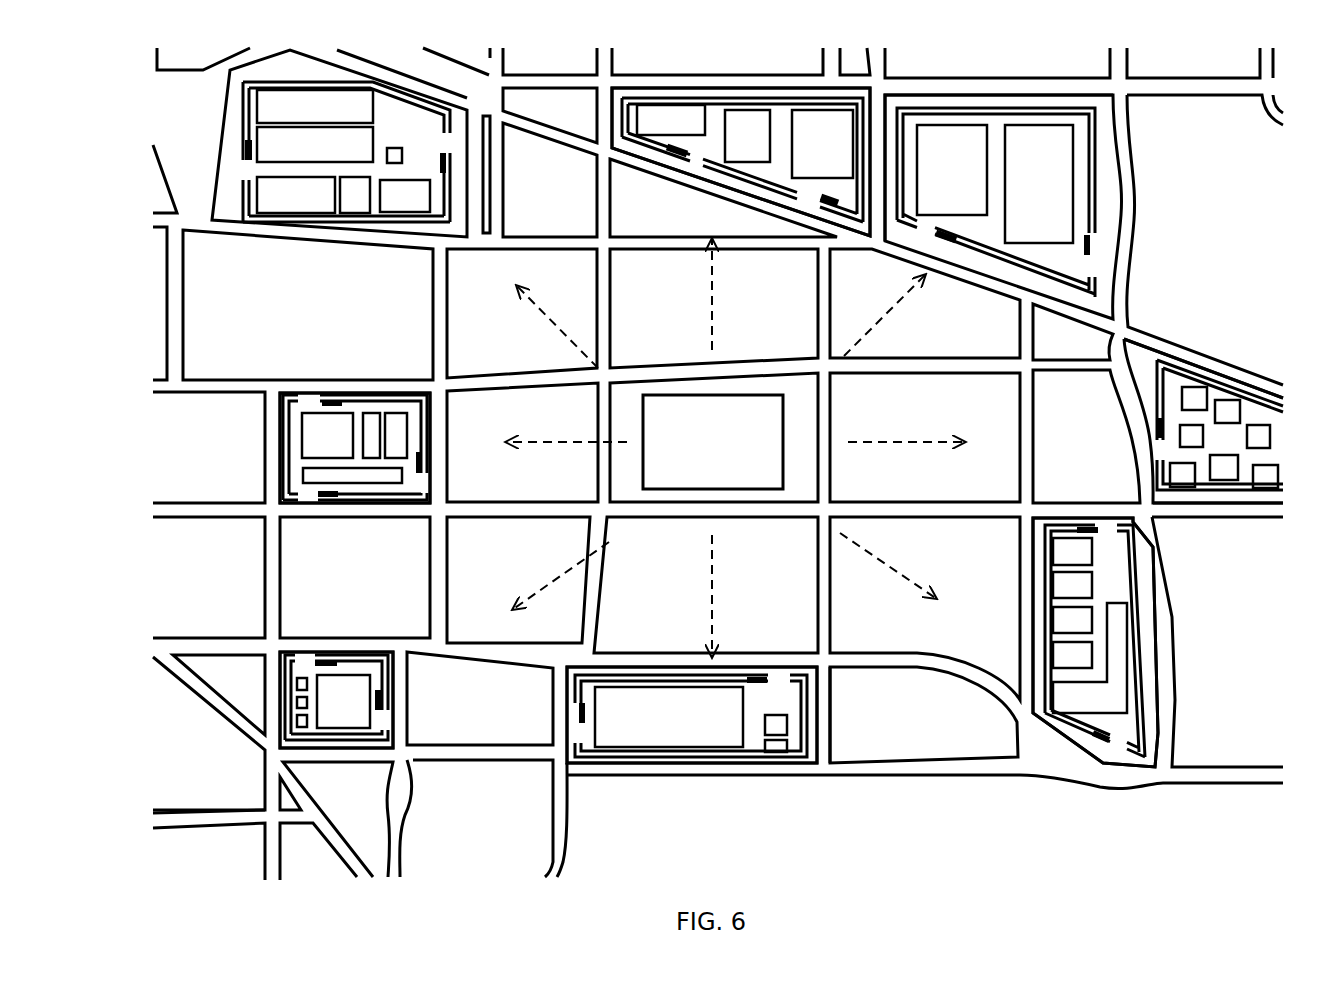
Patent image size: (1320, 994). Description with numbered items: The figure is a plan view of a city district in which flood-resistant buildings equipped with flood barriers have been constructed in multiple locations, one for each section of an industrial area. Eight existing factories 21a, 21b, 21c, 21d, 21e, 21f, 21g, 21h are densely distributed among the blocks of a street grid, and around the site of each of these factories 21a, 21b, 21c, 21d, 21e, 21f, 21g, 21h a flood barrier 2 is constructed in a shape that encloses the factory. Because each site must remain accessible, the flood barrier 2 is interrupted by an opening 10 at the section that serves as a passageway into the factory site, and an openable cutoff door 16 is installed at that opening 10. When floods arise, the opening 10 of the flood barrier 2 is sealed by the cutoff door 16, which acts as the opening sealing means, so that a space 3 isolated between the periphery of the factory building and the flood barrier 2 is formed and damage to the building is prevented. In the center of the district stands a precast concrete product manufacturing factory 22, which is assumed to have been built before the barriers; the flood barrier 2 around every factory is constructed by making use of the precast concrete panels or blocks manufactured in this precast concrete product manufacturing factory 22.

The flood barrier 2 is at (340, 223).
The space 3 is at (432, 116).
The opening 10 is at (244, 171).
The cutoff door 16 is at (757, 676).
The factory 21a is at (388, 116).
The factory 21b is at (781, 110).
The factory 21c is at (996, 118).
The factory 21d is at (1217, 388).
The factory 21e is at (1110, 588).
The factory 21f is at (790, 699).
The factory 21g is at (347, 726).
The factory 21h is at (311, 437).
The precast concrete product manufacturing factory 22 is at (732, 471).